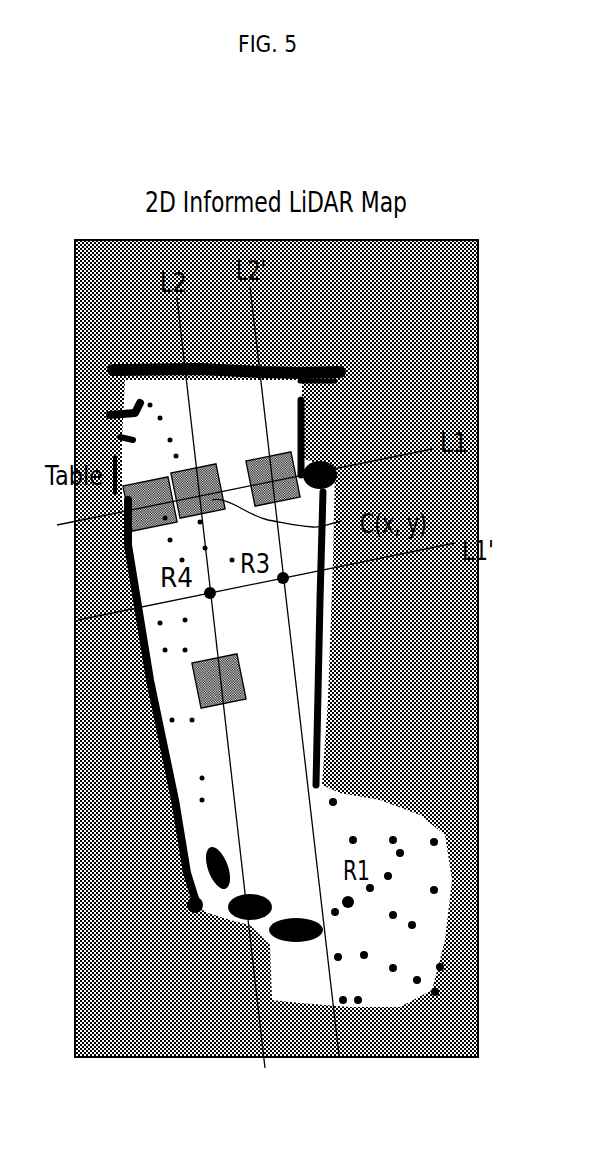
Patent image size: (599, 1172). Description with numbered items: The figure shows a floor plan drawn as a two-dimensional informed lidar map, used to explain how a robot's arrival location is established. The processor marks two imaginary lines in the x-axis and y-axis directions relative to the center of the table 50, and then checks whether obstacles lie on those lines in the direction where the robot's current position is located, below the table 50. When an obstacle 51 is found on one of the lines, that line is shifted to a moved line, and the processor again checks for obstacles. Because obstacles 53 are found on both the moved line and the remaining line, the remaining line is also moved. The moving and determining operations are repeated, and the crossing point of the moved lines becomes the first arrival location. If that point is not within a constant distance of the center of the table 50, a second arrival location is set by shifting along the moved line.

The table 50 is at (209, 468).
The obstacle 51 is at (202, 683).
The obstacles 53 is at (279, 453).